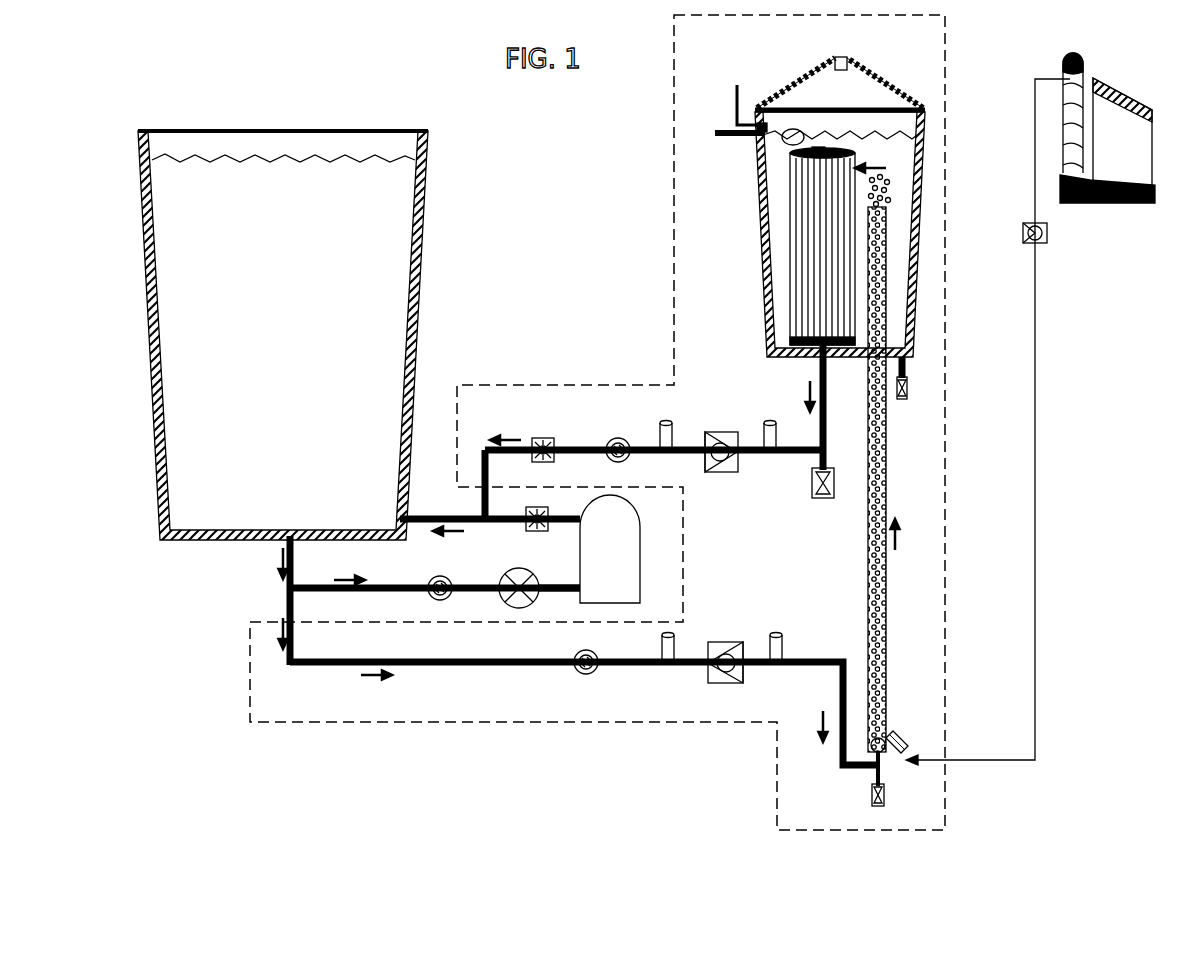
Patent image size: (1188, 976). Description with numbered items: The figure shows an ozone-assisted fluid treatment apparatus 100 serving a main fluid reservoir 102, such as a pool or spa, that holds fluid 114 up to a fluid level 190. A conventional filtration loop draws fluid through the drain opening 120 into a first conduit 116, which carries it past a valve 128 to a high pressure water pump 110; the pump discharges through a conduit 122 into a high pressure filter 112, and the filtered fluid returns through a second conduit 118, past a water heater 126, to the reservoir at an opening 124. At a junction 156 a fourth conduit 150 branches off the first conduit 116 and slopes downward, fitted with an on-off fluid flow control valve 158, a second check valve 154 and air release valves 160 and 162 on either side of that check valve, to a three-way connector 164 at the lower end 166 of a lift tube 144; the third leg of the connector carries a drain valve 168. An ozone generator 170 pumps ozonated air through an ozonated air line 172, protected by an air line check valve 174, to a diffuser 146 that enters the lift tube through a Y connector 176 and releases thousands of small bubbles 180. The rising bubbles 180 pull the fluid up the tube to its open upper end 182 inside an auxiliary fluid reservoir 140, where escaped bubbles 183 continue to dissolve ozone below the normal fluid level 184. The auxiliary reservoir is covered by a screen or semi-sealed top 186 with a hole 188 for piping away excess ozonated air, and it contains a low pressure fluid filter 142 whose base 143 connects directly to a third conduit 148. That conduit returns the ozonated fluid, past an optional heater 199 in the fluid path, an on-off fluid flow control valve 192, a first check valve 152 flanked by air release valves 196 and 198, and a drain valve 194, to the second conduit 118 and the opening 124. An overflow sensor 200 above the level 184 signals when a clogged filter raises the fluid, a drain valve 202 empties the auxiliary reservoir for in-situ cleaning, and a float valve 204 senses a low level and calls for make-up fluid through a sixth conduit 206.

The ozone-assisted fluid treatment apparatus 100 is at (672, 256).
The main fluid reservoir 102 is at (150, 132).
The high pressure water pump 110 is at (526, 580).
The high pressure filter 112 is at (640, 522).
The fluid 114 is at (292, 282).
The first conduit 116 is at (304, 588).
The second conduit 118 is at (495, 517).
The drain opening 120 is at (290, 530).
The conduit 122 is at (552, 594).
The opening 124 is at (402, 518).
The water heater 126 is at (532, 508).
The valve 128 is at (445, 576).
The auxiliary fluid reservoir 140 is at (918, 202).
The low pressure fluid filter 142 is at (790, 207).
The base 143 is at (830, 356).
The lift tube 144 is at (889, 626).
The diffuser 146 is at (883, 737).
The third conduit 148 is at (488, 467).
The fourth conduit 150 is at (292, 636).
The first check valve 152 is at (726, 431).
The second check valve 154 is at (723, 650).
The junction 156 is at (287, 590).
The on-off fluid flow control valve 158 is at (590, 658).
The air release valve 160 is at (672, 632).
The air release valve 162 is at (778, 640).
The 3-way connector 164 is at (882, 768).
The lower end 166 is at (872, 753).
The drain valve 168 is at (885, 800).
The ozone generator 170 is at (1110, 92).
The ozonated air line 172 is at (1032, 128).
The gas regulator valve 174 is at (1021, 242).
The Y connector 176 is at (905, 748).
The bubbles 180 is at (888, 676).
The upper end 182 is at (889, 210).
The bubbles 183 is at (884, 182).
The normal fluid level 184 is at (858, 136).
The top 186 is at (880, 102).
The hole 188 is at (847, 63).
The fluid level 190 is at (298, 157).
The on-off fluid flow control valve 192 is at (614, 437).
The drain valve 194 is at (845, 507).
The air release valve 196 is at (769, 422).
The air release valve 198 is at (665, 421).
The heater 199 is at (543, 437).
The overflow sensor 200 is at (721, 104).
The drain valve 202 is at (908, 398).
The float valve 204 is at (788, 146).
The sixth conduit 206 is at (756, 127).